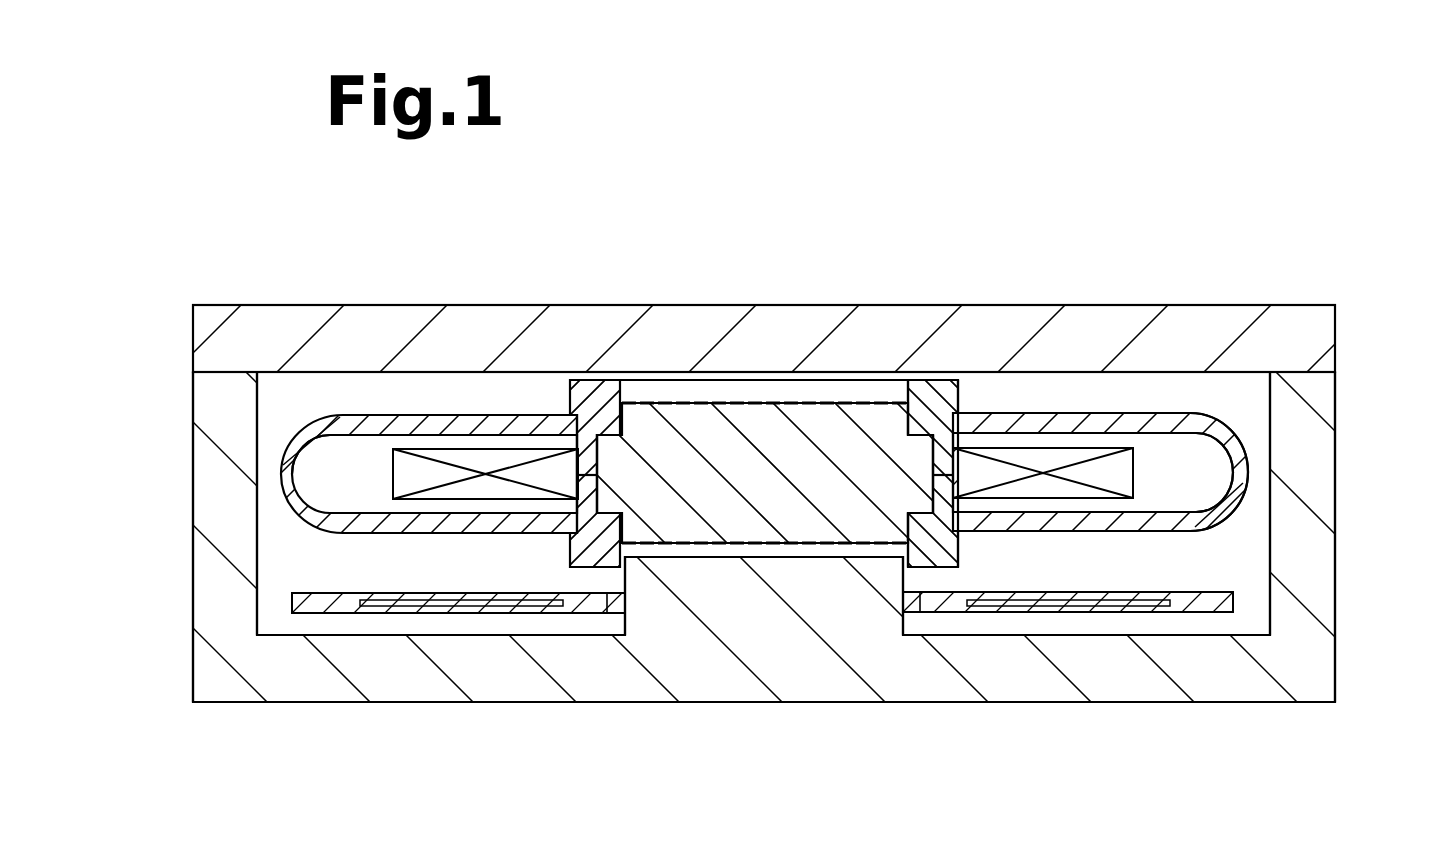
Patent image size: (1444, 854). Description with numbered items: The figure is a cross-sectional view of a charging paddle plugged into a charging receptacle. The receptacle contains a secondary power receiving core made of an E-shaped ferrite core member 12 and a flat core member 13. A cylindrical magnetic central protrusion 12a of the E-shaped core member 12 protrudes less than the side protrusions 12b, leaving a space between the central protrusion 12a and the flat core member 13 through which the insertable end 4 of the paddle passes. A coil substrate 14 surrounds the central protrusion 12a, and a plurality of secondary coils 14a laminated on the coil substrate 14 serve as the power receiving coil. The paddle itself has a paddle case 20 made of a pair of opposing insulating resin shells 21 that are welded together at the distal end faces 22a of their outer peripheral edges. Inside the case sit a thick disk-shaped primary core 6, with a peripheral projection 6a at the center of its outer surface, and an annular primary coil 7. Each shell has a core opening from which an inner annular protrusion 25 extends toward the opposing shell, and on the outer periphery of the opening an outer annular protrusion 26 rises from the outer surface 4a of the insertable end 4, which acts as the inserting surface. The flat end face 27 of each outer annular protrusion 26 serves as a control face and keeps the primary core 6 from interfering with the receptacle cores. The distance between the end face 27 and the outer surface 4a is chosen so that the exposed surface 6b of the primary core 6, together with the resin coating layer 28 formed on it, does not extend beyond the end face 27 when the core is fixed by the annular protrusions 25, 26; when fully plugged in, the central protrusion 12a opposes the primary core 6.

The insertable end 4 is at (382, 536).
The outer surface 4a is at (967, 562).
The primary core 6 is at (683, 420).
The peripheral projection 6a is at (618, 475).
The exposed surface 6b is at (748, 544).
The primary coil 7 is at (1133, 471).
The E-shaped core member 12 is at (1222, 690).
The central protrusion 12a is at (630, 573).
The side protrusions 12b is at (1335, 384).
The flat core member 13 is at (1282, 313).
The coil substrate 14 is at (1122, 593).
The secondary coils 14a is at (437, 598).
The paddle case 20 is at (331, 409).
The shells 21 is at (1237, 503).
The distal end faces 22a is at (278, 474).
The inner annular protrusion 25 is at (930, 463).
The outer annular protrusion 26 is at (933, 568).
The end face 27 is at (950, 568).
The coating layer 28 is at (815, 544).